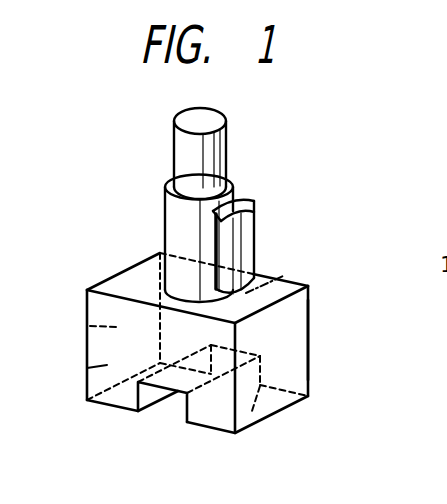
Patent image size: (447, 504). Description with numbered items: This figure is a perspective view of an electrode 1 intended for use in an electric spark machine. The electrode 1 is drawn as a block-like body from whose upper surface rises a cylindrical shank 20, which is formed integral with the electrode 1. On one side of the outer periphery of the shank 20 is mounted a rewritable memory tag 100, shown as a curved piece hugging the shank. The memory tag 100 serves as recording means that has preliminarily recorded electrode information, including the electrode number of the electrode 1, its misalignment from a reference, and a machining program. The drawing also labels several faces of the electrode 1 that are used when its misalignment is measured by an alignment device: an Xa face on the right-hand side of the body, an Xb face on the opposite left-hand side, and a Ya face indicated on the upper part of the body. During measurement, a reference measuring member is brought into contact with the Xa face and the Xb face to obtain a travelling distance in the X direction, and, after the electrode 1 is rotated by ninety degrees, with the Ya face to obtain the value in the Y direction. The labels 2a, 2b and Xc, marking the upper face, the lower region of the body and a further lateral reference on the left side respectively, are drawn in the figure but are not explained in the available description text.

The electrode 1 is at (203, 347).
The top face of block 2a is at (122, 283).
The bottom face of block 2b is at (254, 412).
The shank 20 is at (163, 224).
The rewritable memory tag 100 is at (252, 217).
The Xa face Xa is at (298, 353).
The Xb face Xb is at (88, 326).
The left side reference line Xc is at (87, 368).
The Ya face Ya is at (268, 275).